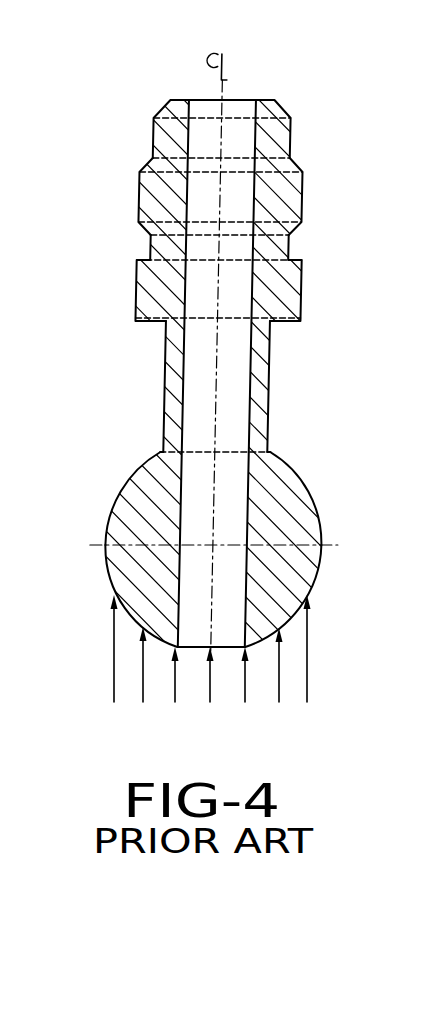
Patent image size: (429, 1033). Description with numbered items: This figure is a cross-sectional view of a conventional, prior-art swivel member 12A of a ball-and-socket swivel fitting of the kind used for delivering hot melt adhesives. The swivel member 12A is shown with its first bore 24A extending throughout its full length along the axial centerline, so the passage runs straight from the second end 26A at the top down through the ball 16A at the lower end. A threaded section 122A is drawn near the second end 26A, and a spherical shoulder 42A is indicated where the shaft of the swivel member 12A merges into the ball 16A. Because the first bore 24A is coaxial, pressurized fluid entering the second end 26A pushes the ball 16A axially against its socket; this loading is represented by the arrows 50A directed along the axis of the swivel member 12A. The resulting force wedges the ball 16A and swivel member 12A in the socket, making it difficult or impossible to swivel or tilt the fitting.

The second end 26A is at (165, 106).
The first bore 24A is at (238, 108).
The threaded section 122A is at (281, 197).
The swivel member 12A is at (268, 392).
The spherical shoulder surface 42A is at (141, 470).
The ball 16A is at (267, 572).
The arrows 50A is at (307, 661).